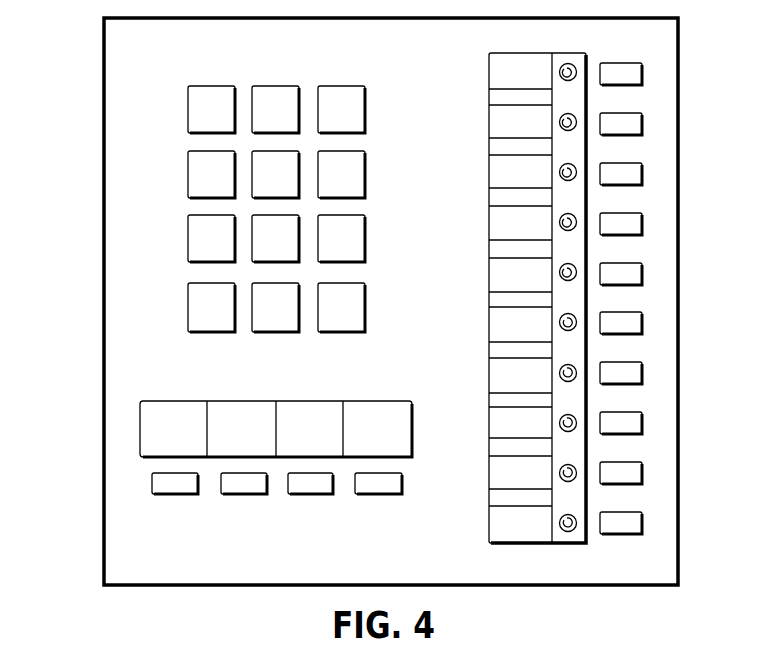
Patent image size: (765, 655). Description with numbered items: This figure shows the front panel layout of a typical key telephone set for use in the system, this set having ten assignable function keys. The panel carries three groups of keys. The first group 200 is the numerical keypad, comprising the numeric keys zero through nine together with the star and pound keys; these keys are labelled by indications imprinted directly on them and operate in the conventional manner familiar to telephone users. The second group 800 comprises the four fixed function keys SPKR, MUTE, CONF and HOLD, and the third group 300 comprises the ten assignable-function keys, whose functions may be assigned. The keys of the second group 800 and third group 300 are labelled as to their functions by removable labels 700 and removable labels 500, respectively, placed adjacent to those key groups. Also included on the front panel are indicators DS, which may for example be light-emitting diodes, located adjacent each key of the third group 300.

The first group of keys 200 is at (186, 158).
The third group of keys 300 is at (635, 161).
The removable labels 500 is at (487, 127).
The removable labels 700 is at (163, 399).
The second group of keys 800 is at (149, 477).
The indicators DS is at (574, 278).